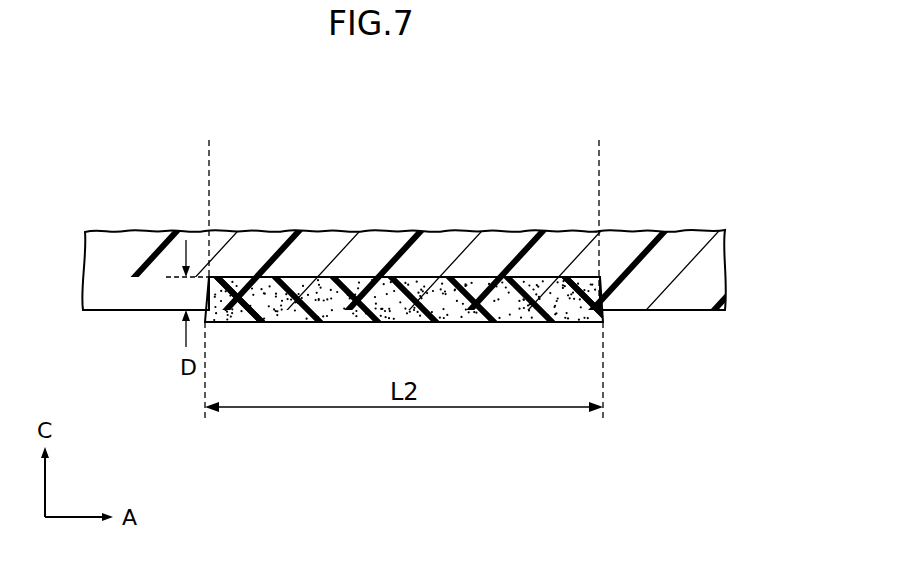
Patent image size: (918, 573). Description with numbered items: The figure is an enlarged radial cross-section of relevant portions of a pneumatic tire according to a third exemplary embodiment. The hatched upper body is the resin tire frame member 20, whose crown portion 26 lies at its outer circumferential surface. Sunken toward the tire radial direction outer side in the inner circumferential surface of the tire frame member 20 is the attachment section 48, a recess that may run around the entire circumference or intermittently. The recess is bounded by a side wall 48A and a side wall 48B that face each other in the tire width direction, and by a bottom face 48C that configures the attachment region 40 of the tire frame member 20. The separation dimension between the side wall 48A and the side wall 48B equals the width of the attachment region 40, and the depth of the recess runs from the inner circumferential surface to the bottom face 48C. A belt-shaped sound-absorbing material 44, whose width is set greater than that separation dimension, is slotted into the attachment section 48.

The tire frame member 20 is at (126, 234).
The crown portion 26 is at (673, 247).
The attachment region 40 is at (587, 149).
The belt-shaped sound-absorbing material 44 is at (458, 323).
The attachment section 48 is at (329, 306).
The side wall 48A is at (237, 301).
The side wall 48B is at (578, 323).
The bottom face 48C is at (296, 283).